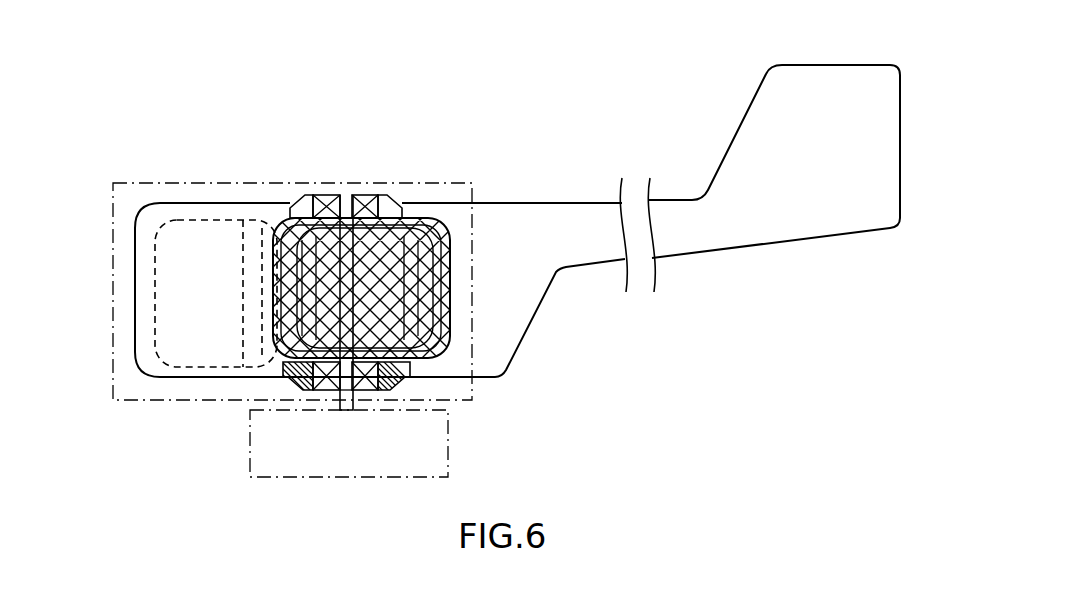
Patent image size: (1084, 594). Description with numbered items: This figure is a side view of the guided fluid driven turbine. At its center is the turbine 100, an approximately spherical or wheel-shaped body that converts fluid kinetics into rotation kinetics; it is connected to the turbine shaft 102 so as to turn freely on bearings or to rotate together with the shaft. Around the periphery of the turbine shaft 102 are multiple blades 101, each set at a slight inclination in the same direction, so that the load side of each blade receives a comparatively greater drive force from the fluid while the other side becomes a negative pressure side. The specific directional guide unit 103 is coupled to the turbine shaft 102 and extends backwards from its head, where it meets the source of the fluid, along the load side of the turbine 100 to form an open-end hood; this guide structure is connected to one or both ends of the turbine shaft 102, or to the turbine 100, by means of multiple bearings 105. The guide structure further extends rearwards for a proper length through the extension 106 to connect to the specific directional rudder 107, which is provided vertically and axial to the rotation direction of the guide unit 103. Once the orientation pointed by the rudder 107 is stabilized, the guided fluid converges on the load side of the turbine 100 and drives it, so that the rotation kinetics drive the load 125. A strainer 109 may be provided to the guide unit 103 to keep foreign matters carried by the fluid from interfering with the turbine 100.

The turbine 100 is at (320, 183).
The blades 101 is at (280, 218).
The turbine shaft 102 is at (345, 205).
The specific directional guide unit 103 is at (180, 183).
The bearings 105 is at (366, 205).
The extension 106 is at (561, 223).
The specific directional rudder 107 is at (803, 90).
The strainer 109 is at (416, 217).
The load 125 is at (448, 450).